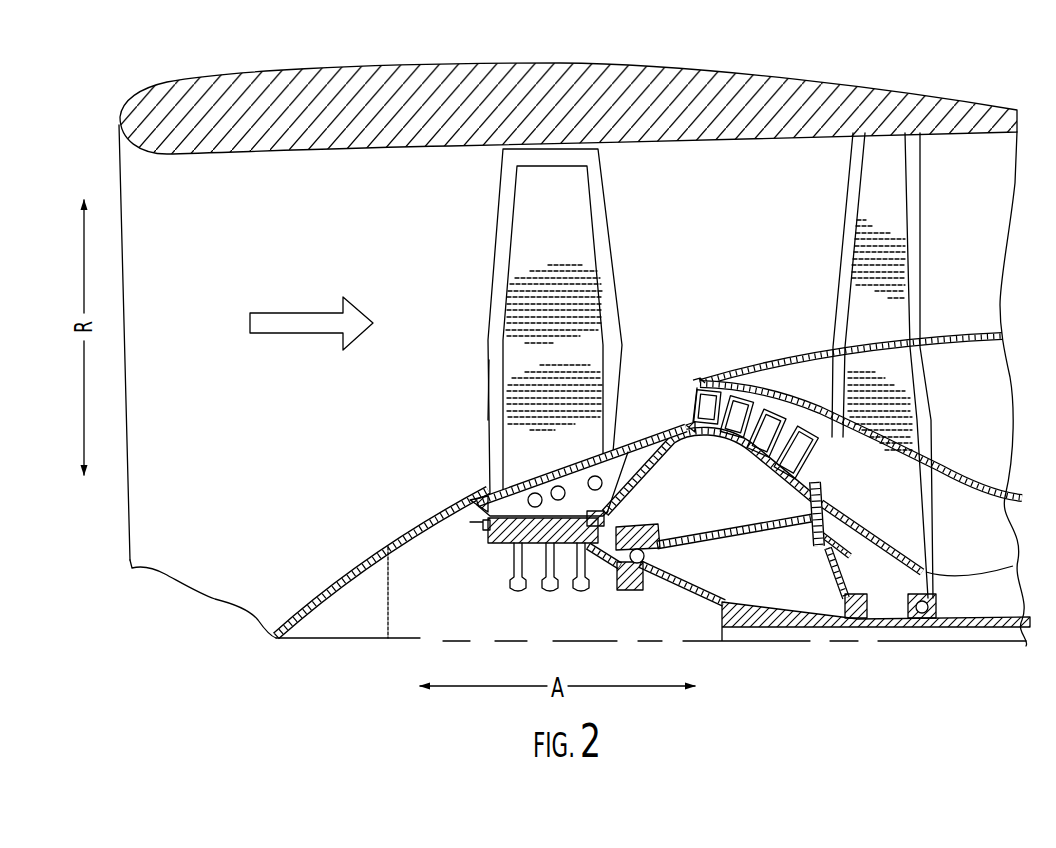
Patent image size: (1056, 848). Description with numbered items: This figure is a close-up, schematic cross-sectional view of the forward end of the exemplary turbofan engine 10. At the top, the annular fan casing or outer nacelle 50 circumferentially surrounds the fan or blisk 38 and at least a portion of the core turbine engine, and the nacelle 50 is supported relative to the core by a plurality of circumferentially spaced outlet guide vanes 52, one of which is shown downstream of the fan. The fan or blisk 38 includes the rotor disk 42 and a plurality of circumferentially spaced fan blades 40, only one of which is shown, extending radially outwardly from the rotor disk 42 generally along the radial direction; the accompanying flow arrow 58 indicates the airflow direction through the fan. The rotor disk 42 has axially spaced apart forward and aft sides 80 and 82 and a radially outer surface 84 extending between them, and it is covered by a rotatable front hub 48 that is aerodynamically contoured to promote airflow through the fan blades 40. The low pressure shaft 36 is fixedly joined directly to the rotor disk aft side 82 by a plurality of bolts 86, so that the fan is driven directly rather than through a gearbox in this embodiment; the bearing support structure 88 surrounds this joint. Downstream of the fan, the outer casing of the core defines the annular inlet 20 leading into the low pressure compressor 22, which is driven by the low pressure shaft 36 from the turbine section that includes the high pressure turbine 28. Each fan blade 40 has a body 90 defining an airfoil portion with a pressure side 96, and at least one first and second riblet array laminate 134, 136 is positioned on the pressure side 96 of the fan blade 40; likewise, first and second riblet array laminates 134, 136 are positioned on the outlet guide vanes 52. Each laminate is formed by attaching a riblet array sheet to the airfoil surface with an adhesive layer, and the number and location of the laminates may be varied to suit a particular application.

The turbofan engine 10 is at (177, 60).
The annular inlet 20 is at (688, 378).
The low pressure (LP) compressor 22 is at (793, 382).
The high pressure (HP) turbine 28 is at (677, 441).
The low pressure (LP) shaft 36 is at (763, 598).
The fan 38 is at (335, 422).
The fan blades 40 is at (622, 281).
The rotor disk 42 is at (500, 550).
The front hub 48 is at (332, 585).
The nacelle 50 is at (636, 66).
The outlet guide vanes 52 is at (921, 225).
The airflow direction 58 is at (275, 336).
The forward side 80 is at (486, 532).
The aft side 82 is at (602, 525).
The radially outer surface 84 is at (590, 562).
The bolts 86 is at (616, 509).
The housing 88 is at (546, 468).
The body 90 is at (508, 478).
The pressure side 96 is at (489, 392).
The second riblet array laminate 134 is at (572, 395).
The first riblet array laminate 136 is at (572, 266).